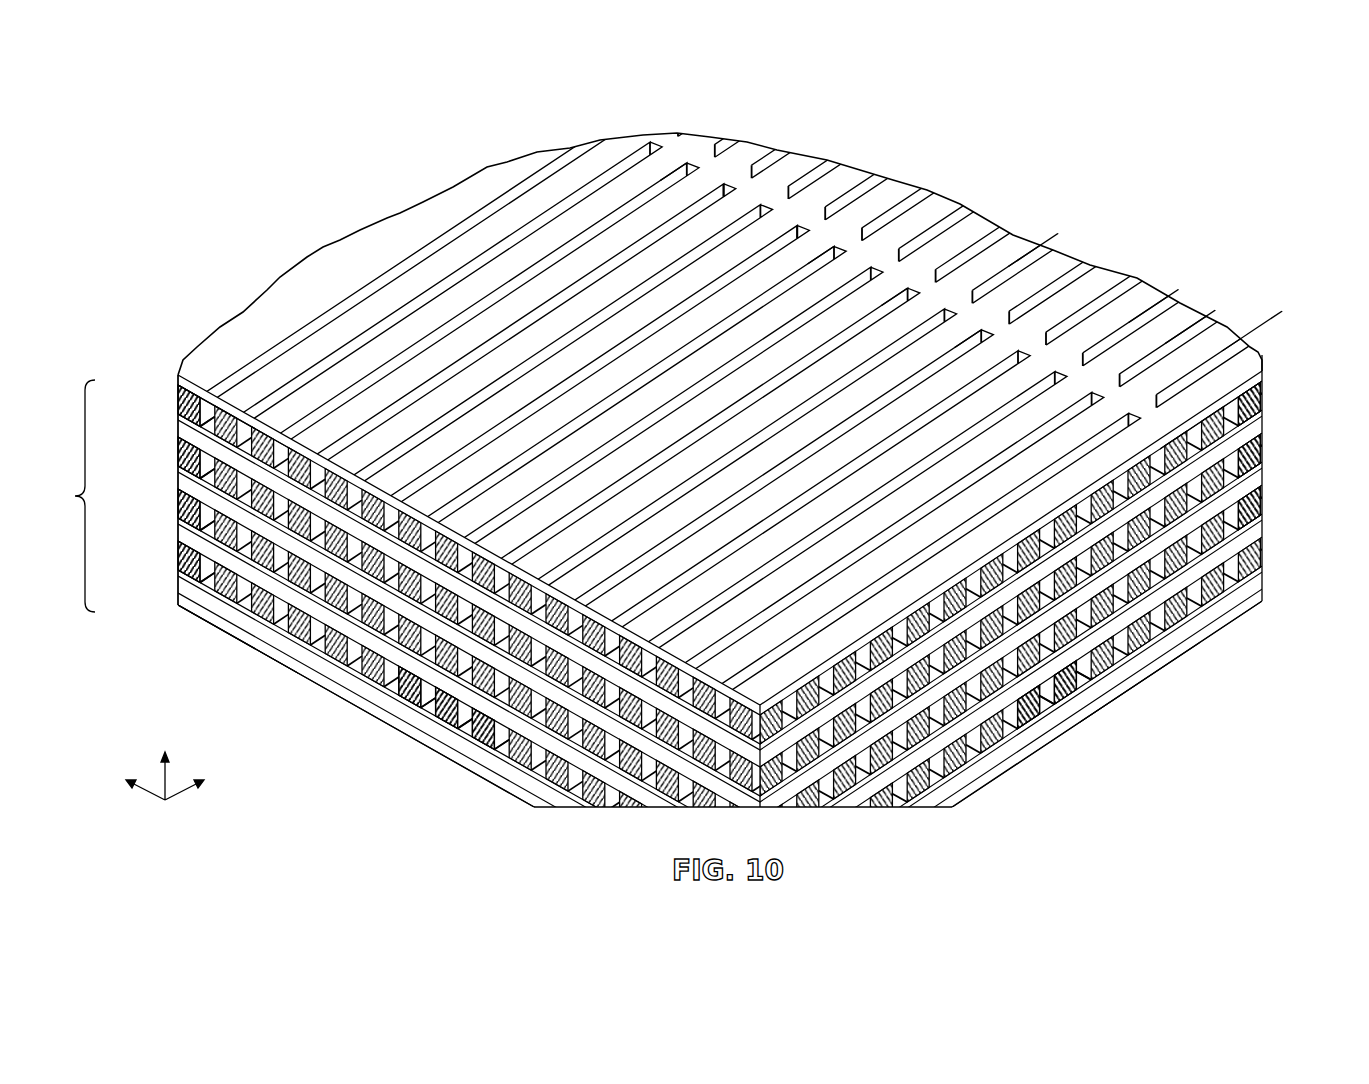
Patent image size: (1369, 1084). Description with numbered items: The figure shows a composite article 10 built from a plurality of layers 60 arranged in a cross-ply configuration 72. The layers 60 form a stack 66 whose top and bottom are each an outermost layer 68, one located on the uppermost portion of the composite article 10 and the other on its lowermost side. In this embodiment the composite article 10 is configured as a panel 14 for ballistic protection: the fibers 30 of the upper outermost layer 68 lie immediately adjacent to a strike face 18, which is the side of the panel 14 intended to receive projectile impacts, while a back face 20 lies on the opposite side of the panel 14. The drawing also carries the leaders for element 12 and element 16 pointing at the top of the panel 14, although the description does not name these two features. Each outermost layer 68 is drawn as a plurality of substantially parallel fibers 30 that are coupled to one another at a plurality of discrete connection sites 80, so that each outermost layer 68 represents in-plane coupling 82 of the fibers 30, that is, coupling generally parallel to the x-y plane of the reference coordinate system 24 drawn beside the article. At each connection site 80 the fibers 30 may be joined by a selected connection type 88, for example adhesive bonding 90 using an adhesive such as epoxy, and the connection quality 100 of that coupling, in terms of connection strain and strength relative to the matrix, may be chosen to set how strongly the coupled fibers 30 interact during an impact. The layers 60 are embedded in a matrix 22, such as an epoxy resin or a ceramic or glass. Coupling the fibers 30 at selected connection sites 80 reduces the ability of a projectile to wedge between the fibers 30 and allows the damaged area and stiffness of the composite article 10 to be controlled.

The composite article 10 is at (1112, 270).
The rib 12 is at (1140, 300).
The panel 14 is at (1237, 325).
The rib top surface 16 is at (1180, 323).
The strike face 18 is at (993, 325).
The back face 20 is at (1130, 690).
The matrix 22 is at (1262, 371).
The reference coordinate system 24 is at (164, 786).
The fibers 30 is at (1240, 510).
The layers 60 is at (178, 396).
The stack 66 is at (68, 496).
The outermost layer 68 is at (178, 381).
The cross-ply configuration 72 is at (109, 490).
The connection sites 80 is at (806, 222).
The in-plane coupling 82 is at (847, 250).
The connection type 88 is at (703, 157).
The adhesive bonding 90 is at (927, 287).
The connection quality 100 is at (1040, 255).